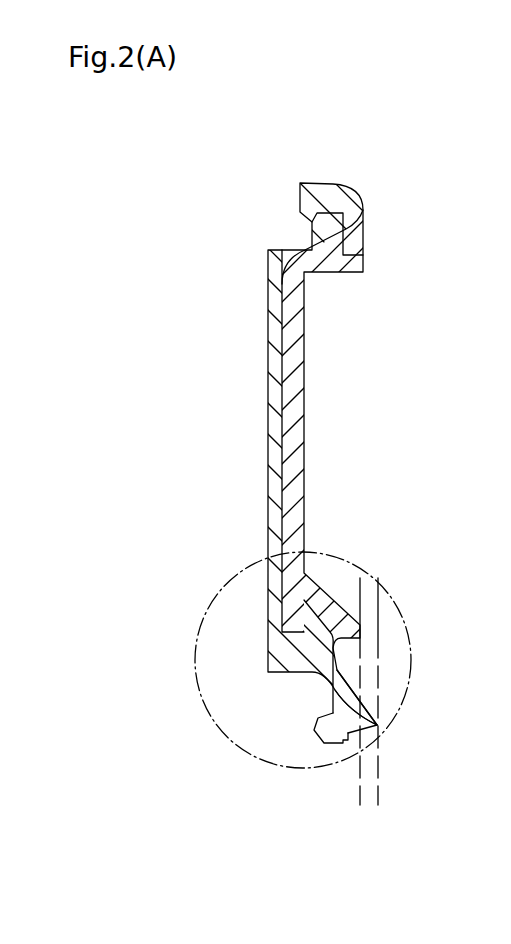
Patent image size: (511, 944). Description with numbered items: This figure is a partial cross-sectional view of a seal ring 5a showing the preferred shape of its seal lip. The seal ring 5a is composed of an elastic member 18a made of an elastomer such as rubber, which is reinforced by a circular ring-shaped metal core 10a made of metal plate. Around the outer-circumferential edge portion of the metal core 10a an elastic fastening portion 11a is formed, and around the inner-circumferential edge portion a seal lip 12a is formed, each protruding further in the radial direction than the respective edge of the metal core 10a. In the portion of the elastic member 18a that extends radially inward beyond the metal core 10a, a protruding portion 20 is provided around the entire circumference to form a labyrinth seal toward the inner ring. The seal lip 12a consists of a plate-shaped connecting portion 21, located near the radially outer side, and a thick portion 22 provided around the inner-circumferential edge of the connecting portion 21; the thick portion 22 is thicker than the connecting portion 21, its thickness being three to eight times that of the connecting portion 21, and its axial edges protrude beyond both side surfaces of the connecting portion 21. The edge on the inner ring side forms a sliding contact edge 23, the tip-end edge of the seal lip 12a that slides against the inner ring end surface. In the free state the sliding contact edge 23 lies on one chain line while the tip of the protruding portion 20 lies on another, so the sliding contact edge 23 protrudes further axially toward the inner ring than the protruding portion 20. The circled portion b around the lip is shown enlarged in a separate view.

The seal ring 5a is at (263, 365).
The metal core 10a is at (293, 323).
The elastic fastening portion 11a is at (326, 200).
The elastic member 18a is at (273, 467).
The seal lip 12a is at (308, 722).
The protruding portion 20 is at (363, 626).
The connecting portion 21 is at (331, 690).
The thick portion 22 is at (320, 732).
The sliding contact edge 23 is at (378, 725).
The portion b is at (349, 558).